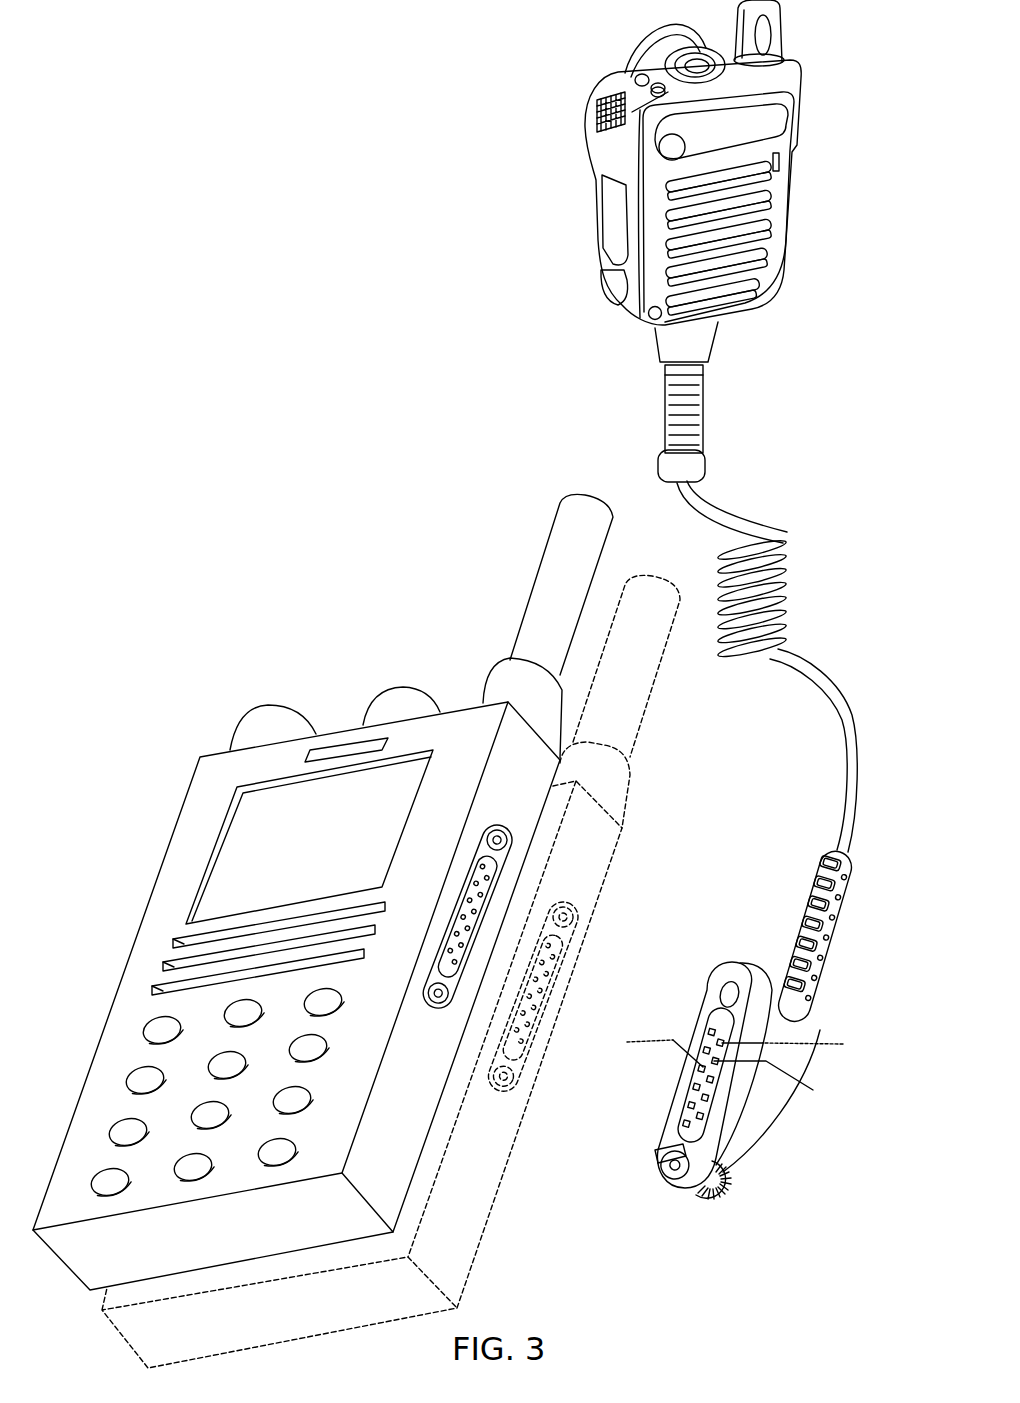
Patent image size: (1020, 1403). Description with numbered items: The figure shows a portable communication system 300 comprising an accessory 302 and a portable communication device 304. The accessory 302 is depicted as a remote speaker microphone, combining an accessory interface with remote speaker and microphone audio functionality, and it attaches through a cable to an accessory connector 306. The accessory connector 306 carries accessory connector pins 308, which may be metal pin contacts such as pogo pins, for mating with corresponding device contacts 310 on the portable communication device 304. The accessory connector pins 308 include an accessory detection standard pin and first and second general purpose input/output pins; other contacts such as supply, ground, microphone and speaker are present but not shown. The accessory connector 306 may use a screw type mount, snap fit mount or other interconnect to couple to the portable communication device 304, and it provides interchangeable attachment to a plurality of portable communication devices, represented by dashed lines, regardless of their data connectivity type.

The portable communication system 300 is at (263, 266).
The accessory 302 is at (810, 124).
The portable communication device 304 is at (193, 748).
The accessory connector 306 is at (672, 1121).
The accessory connector pins 308 is at (702, 1102).
The device contacts 310 is at (472, 908).